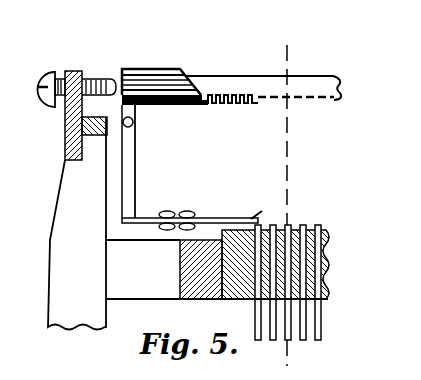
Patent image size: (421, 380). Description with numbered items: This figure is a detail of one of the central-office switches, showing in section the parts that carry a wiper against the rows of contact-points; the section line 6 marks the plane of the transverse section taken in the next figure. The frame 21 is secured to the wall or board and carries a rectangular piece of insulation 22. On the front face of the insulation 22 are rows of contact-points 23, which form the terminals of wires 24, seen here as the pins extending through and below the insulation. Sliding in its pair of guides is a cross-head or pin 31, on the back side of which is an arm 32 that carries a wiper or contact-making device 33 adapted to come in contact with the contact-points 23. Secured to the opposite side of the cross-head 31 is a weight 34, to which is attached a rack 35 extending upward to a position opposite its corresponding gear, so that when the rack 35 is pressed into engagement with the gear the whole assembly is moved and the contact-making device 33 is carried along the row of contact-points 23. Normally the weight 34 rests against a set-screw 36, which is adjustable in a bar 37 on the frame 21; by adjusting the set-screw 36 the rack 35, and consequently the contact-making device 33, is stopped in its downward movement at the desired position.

The section line 6- 6 is at (295, 203).
The frame 21 is at (188, 223).
The piece of insulation 22 is at (329, 260).
The contact-points 23 is at (302, 226).
The wires 24 is at (321, 316).
The cross-head or pin 31 is at (134, 124).
The arm 32 is at (137, 172).
The wiper or contact-making device 33 is at (213, 217).
The weight 34 is at (156, 72).
The rack 35 is at (238, 104).
The set-screw 36 is at (102, 78).
The bar 37 is at (65, 142).